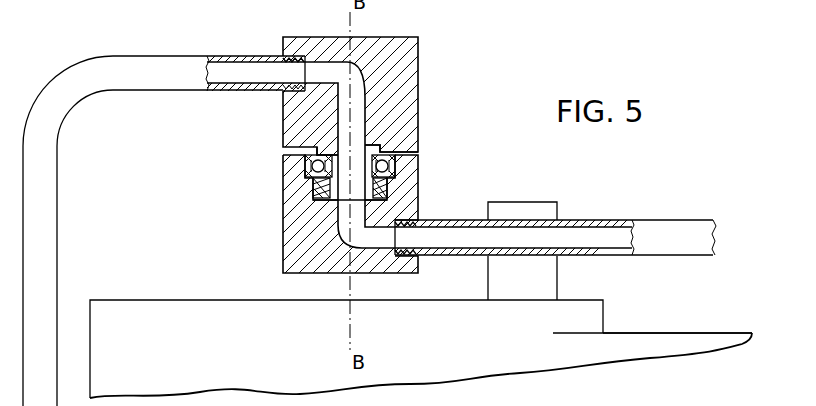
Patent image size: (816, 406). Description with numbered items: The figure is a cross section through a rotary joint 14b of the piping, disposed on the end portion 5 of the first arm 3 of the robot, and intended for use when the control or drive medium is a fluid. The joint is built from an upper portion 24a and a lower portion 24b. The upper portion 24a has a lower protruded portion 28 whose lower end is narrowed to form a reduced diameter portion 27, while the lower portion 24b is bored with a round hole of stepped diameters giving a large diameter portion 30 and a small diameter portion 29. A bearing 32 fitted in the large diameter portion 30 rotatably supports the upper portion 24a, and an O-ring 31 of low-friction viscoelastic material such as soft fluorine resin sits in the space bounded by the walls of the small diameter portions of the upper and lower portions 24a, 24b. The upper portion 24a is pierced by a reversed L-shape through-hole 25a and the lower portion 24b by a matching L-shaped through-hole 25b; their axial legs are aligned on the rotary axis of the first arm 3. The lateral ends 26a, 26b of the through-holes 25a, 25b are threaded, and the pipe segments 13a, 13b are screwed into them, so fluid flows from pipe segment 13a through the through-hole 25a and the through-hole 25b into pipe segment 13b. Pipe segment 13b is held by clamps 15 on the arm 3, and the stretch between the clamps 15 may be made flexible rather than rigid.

The first arm 3 is at (637, 338).
The end portion 5 is at (120, 315).
The pipe segment 13a is at (65, 72).
The pipe segment 13b is at (643, 220).
The rotary joint 14b is at (391, 34).
The clamp 15 is at (535, 202).
The upper portion 24a is at (328, 45).
The lower portion 24b is at (323, 262).
The reversed L-shape through-hole 25a is at (366, 98).
The L-shaped through-hole 25b is at (380, 257).
The lateral end 26a is at (287, 97).
The lateral end 26b is at (405, 260).
The reduced diameter portion 27 is at (335, 155).
The lower protruded portion 28 is at (420, 151).
The small diameter portion 29 is at (385, 205).
The large diameter portion 30 is at (397, 165).
The O-ring 31 is at (316, 190).
The bearing 32 is at (311, 165).